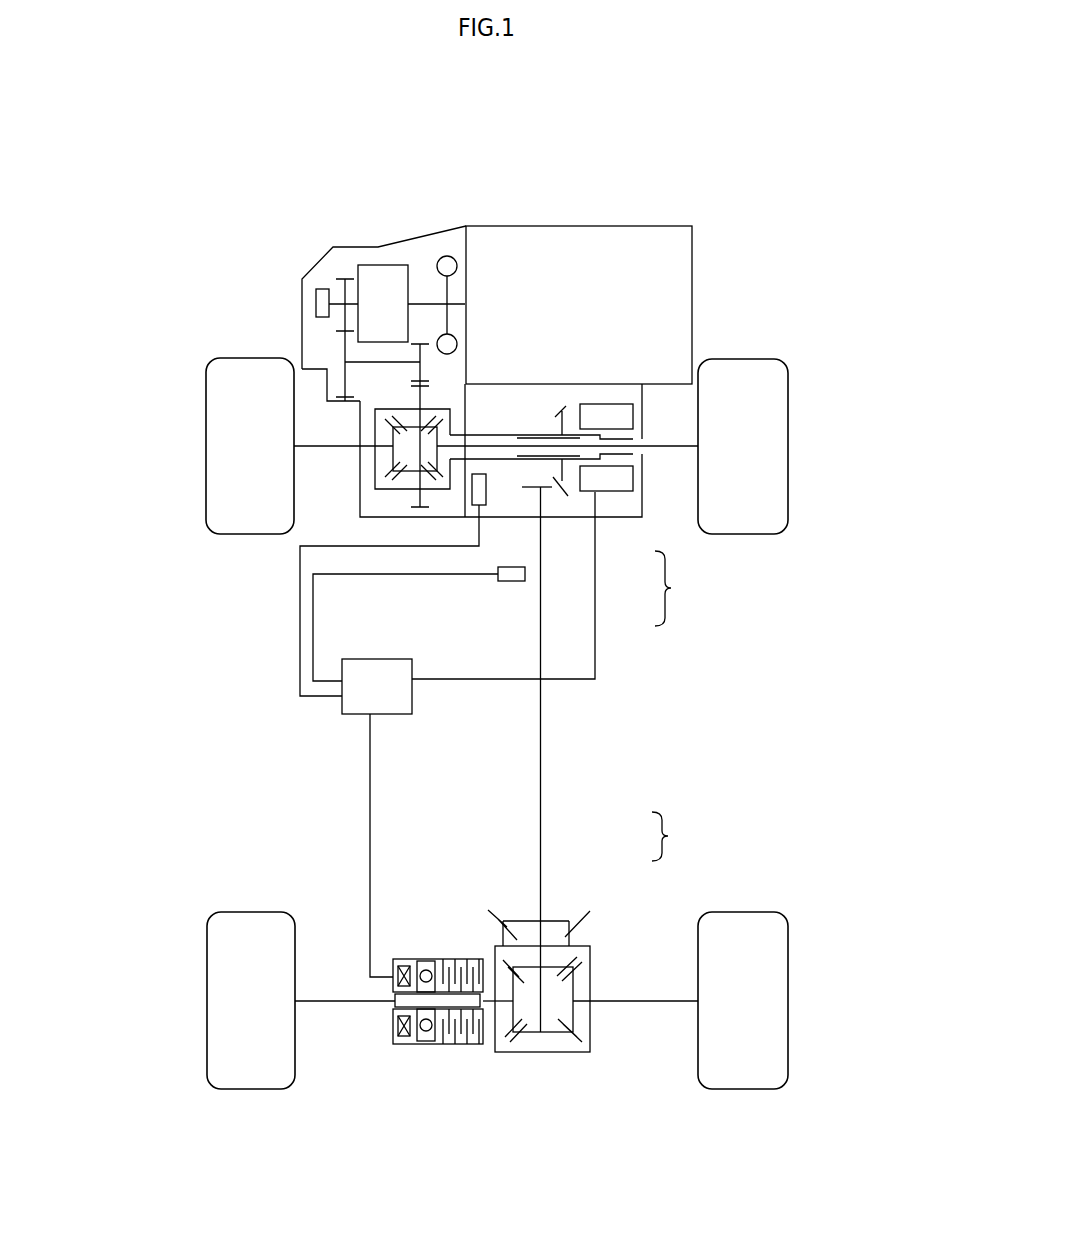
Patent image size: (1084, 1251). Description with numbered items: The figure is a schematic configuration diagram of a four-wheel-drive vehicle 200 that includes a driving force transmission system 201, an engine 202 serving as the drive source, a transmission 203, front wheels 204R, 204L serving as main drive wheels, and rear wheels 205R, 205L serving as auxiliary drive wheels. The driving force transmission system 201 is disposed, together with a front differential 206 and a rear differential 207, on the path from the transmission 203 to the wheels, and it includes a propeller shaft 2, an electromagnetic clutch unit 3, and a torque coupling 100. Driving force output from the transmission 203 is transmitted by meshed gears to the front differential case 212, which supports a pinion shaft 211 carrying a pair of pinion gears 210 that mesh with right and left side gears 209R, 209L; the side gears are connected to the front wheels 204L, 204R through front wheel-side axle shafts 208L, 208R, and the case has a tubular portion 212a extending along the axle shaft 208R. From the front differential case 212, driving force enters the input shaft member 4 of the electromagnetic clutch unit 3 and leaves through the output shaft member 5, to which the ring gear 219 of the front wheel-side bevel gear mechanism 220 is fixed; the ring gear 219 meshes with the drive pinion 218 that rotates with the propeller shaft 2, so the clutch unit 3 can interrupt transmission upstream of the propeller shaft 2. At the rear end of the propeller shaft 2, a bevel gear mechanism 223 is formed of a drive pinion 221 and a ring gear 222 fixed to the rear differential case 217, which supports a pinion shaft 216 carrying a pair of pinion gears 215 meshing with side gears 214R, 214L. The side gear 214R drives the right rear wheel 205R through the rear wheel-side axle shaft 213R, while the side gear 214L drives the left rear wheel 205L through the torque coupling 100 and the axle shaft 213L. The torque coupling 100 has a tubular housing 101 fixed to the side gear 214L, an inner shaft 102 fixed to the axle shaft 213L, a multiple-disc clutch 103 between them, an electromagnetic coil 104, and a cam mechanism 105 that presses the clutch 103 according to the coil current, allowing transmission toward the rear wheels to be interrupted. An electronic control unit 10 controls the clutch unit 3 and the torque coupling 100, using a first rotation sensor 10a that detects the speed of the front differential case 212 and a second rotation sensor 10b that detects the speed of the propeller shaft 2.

The four-wheel-drive vehicle 200 is at (700, 165).
The driving force transmission system 201 is at (662, 665).
The engine 202 is at (522, 223).
The transmission 203 is at (370, 244).
The left front wheel 204L is at (206, 450).
The right front wheel 204R is at (788, 440).
The left rear wheel 205L is at (207, 1000).
The right rear wheel 205R is at (788, 1000).
The front differential 206 is at (350, 497).
The rear differential 207 is at (597, 1040).
The front wheel-side axle shaft 208L is at (348, 444).
The front wheel-side axle shaft 208R is at (677, 447).
The left side gear 209L is at (391, 459).
The right side gear 209R is at (440, 478).
The pinion gears 210 is at (380, 420).
The pinion shaft 211 is at (402, 411).
The front differential case 212 is at (445, 408).
The tubular portion 212a is at (475, 434).
The output shaft member 5 is at (546, 424).
The electromagnetic clutch unit 3 is at (603, 498).
The input shaft member 4 is at (533, 462).
The ring gear 219 is at (553, 478).
The drive pinion 218 is at (552, 488).
The front wheel-side bevel gear mechanism 220 is at (679, 588).
The propeller shaft 2 is at (542, 770).
The electronic control unit (ECU) 10 is at (357, 717).
The first rotation sensor 10a is at (480, 508).
The second rotation sensor 10b is at (510, 583).
The torque coupling 100 is at (452, 940).
The tubular housing 101 is at (442, 960).
The inner shaft 102 is at (460, 1003).
The multiple-disc clutch 103 is at (463, 957).
The electromagnetic coil 104 is at (398, 1038).
The cam mechanism 105 is at (422, 960).
The rear wheel-side axle shaft 213L is at (378, 1005).
The rear wheel-side axle shaft 213R is at (643, 1003).
The left side gear 214L is at (510, 1015).
The right side gear 214R is at (575, 1000).
The pinion gears 215 is at (557, 967).
The pinion shaft 216 is at (542, 1010).
The rear differential case 217 is at (590, 962).
The drive pinion 221 is at (583, 917).
The ring gear 222 is at (498, 918).
The bevel gear mechanism 223 is at (677, 836).